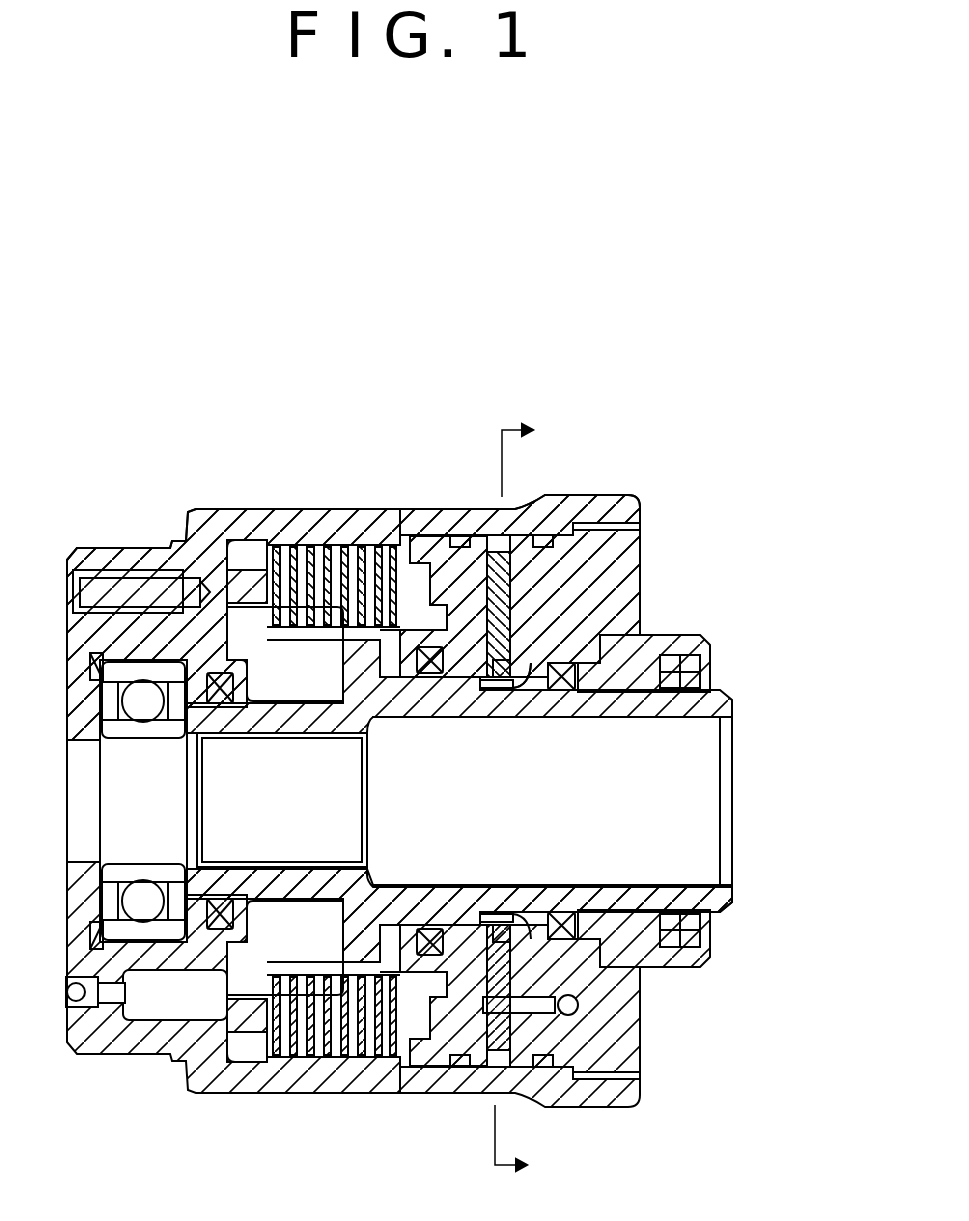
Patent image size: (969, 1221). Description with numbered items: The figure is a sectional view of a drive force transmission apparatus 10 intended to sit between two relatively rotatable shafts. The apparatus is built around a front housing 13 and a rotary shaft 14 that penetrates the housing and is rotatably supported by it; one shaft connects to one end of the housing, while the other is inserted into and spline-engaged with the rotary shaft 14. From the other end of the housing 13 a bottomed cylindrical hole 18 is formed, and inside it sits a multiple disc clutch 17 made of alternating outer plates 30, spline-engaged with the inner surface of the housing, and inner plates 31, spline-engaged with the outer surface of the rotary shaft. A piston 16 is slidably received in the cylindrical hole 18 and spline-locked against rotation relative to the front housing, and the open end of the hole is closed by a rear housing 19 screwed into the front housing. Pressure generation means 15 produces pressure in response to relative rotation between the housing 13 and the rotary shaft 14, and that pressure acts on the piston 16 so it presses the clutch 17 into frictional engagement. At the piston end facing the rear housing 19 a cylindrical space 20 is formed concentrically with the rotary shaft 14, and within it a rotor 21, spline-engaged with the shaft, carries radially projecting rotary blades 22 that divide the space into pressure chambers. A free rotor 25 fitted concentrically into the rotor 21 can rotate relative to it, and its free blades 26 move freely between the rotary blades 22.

The drive force transmission apparatus 10 is at (453, 778).
The front housing 13 is at (197, 520).
The rotary shaft 14 is at (705, 897).
The pressure generation means 15 is at (520, 582).
The piston 16 is at (435, 527).
The multiple disc clutch 17 is at (317, 512).
The cylindrical hole 18 is at (327, 527).
The rear housing 19 is at (610, 527).
The cylindrical space 20 is at (483, 1047).
The rotor 21 is at (503, 690).
The rotary blades 22 is at (490, 527).
The free rotor 25 is at (537, 690).
The free blades 26 is at (500, 965).
The outer plates 30 is at (345, 1060).
The inner plates 31 is at (302, 884).